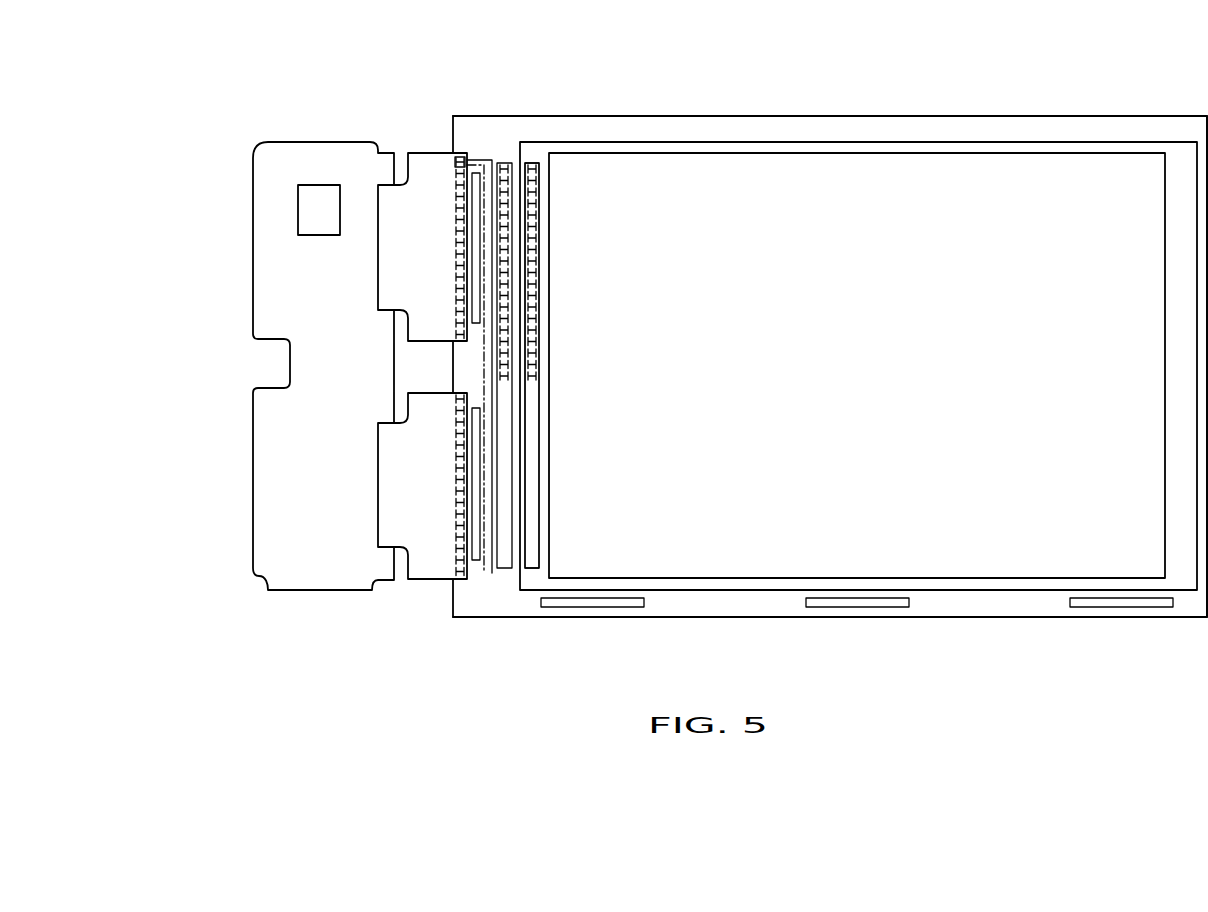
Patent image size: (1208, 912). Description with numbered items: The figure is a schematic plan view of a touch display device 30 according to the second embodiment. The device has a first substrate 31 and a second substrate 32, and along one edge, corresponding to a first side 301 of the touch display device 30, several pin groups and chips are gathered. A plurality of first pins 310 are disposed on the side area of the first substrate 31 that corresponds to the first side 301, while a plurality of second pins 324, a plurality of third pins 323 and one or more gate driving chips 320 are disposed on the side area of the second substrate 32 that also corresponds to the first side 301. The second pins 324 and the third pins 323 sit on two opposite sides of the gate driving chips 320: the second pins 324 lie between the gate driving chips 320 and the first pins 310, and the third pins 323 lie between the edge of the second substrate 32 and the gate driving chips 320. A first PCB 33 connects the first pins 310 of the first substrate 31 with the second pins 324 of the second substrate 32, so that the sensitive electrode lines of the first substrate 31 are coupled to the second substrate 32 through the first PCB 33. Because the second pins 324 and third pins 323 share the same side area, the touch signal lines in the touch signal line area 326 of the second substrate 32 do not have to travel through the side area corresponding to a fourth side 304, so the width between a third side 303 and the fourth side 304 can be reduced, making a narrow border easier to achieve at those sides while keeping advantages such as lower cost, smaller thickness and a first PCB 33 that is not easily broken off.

The touch display device 30 is at (747, 44).
The first side 301 is at (238, 364).
The third side 303 is at (655, 641).
The fourth side 304 is at (679, 102).
The first substrate 31 is at (1178, 155).
The second substrate 32 is at (737, 600).
The first PCB 33 is at (525, 565).
The first pins 310 is at (533, 168).
The gate driving chips 320 is at (477, 560).
The third pins 323 is at (462, 185).
The second pins 324 is at (503, 167).
The touch signal line area 326 is at (477, 162).